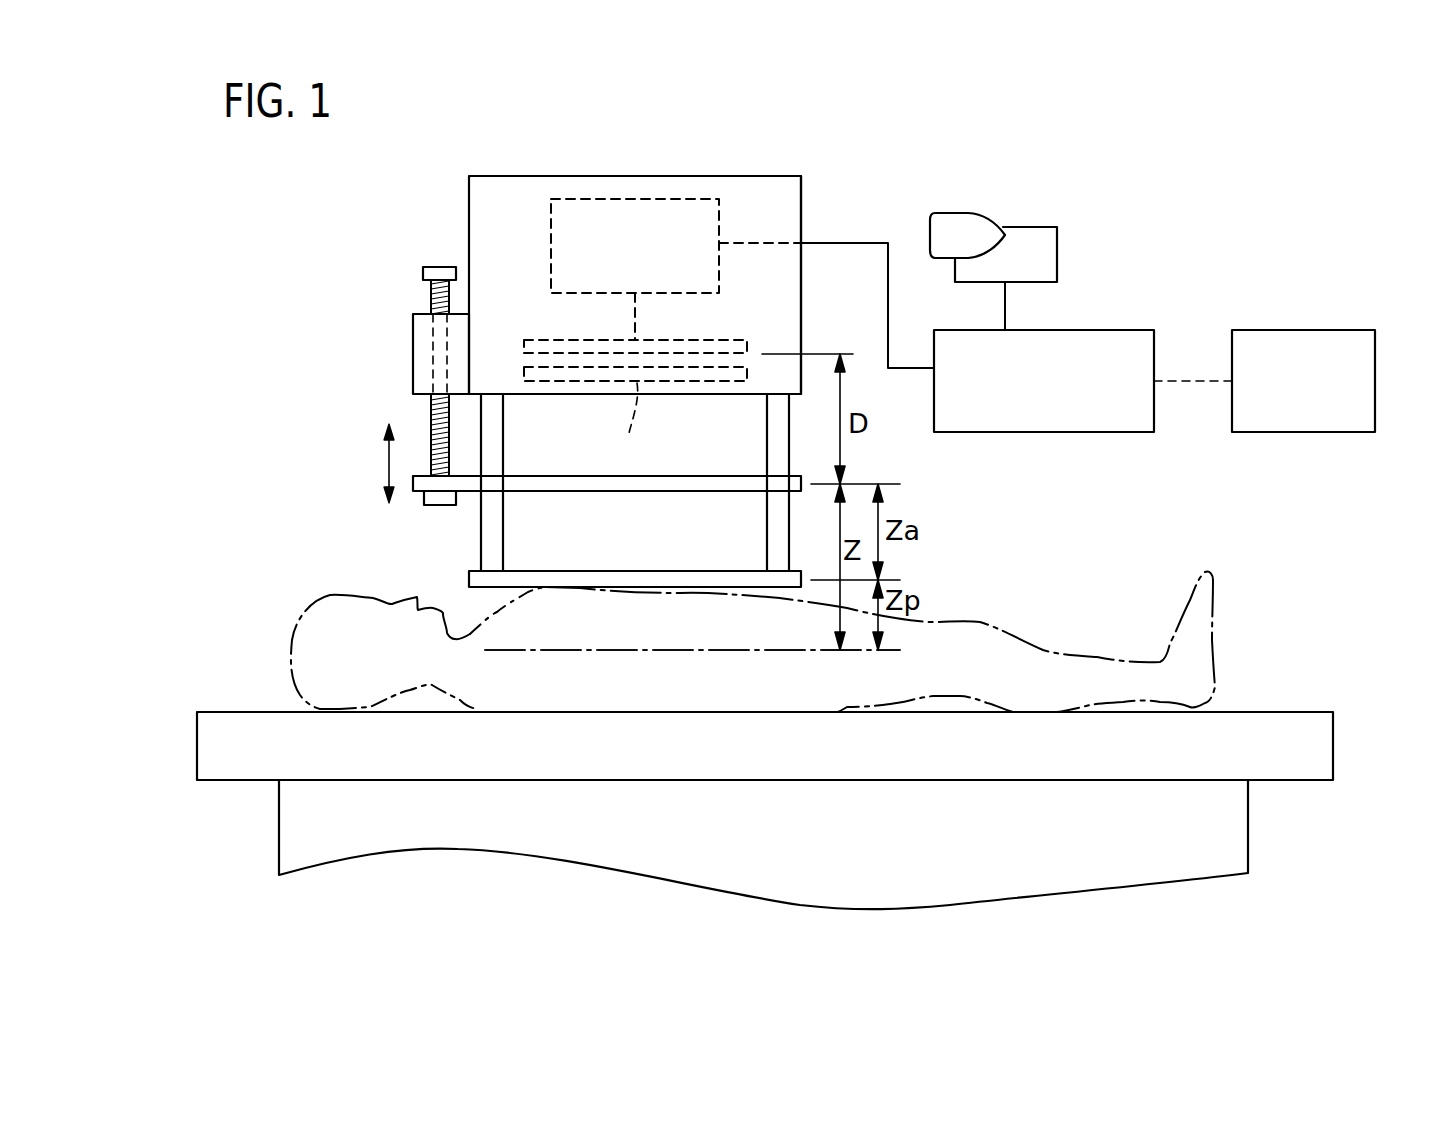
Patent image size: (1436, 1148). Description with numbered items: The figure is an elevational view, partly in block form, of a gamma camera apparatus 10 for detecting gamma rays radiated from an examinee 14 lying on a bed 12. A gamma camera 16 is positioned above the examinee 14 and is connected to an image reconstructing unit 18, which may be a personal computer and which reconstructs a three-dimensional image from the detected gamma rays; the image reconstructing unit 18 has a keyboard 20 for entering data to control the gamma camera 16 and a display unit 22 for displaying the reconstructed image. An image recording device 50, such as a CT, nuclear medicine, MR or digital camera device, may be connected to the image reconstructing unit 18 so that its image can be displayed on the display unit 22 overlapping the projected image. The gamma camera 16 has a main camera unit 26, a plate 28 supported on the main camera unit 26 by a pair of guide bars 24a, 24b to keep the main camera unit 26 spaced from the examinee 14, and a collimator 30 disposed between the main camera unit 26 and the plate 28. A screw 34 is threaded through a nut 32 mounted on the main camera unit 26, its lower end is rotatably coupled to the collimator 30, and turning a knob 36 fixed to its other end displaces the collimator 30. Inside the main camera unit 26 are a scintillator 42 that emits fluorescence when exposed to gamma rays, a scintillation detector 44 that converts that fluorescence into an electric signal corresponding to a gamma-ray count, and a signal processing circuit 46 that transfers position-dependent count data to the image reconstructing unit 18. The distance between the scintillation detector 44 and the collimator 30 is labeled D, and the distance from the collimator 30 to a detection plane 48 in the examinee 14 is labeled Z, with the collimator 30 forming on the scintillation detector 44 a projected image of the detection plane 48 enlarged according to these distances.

The gamma camera apparatus 10 is at (990, 472).
The bed 12 is at (1295, 728).
The examinee 14 is at (1036, 658).
The gamma camera 16 is at (774, 163).
The image reconstructing unit 18 is at (1138, 330).
The keyboard 20 is at (1057, 243).
The display unit 22 is at (930, 233).
The guide bar 24a is at (504, 437).
The guide bar 24b is at (770, 437).
The main camera unit 26 is at (792, 277).
The plate 28 is at (545, 578).
The collimator 30 is at (703, 485).
The nut 32 is at (413, 336).
The screw 34 is at (431, 421).
The knob 36 is at (440, 272).
The scintillator 42 is at (629, 426).
The scintillation detector 44 is at (727, 327).
The signal processing circuit 46 is at (669, 197).
The detection plane 48 is at (669, 652).
The image recording device 50 is at (1345, 330).